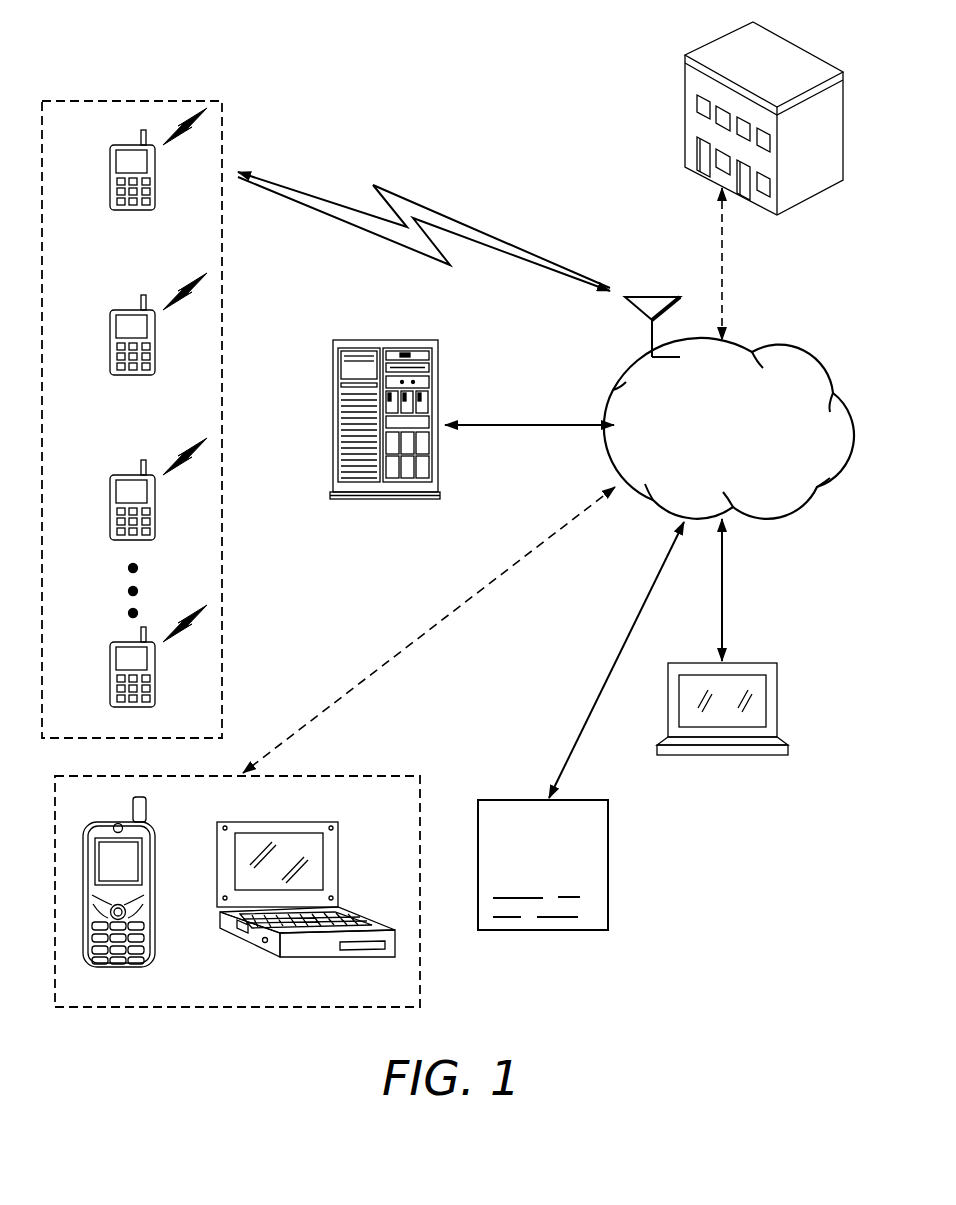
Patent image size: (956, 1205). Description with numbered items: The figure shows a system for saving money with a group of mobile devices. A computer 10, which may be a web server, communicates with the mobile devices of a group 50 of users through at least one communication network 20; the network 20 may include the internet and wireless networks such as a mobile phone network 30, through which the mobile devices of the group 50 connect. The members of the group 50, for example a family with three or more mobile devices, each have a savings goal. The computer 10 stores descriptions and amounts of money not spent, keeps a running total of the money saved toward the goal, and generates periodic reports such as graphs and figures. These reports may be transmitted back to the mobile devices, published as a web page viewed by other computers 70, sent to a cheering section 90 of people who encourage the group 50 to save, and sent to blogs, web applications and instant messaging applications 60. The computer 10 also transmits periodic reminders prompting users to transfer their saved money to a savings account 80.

The computer 10 is at (425, 340).
The communication network 20 is at (785, 346).
The mobile phone network 30 is at (650, 337).
The group 50 is at (205, 101).
The blogs / web apps / IM services 60 is at (592, 800).
The other computers 70 is at (768, 663).
The savings account 80 is at (795, 46).
The cheering section 90 is at (400, 776).